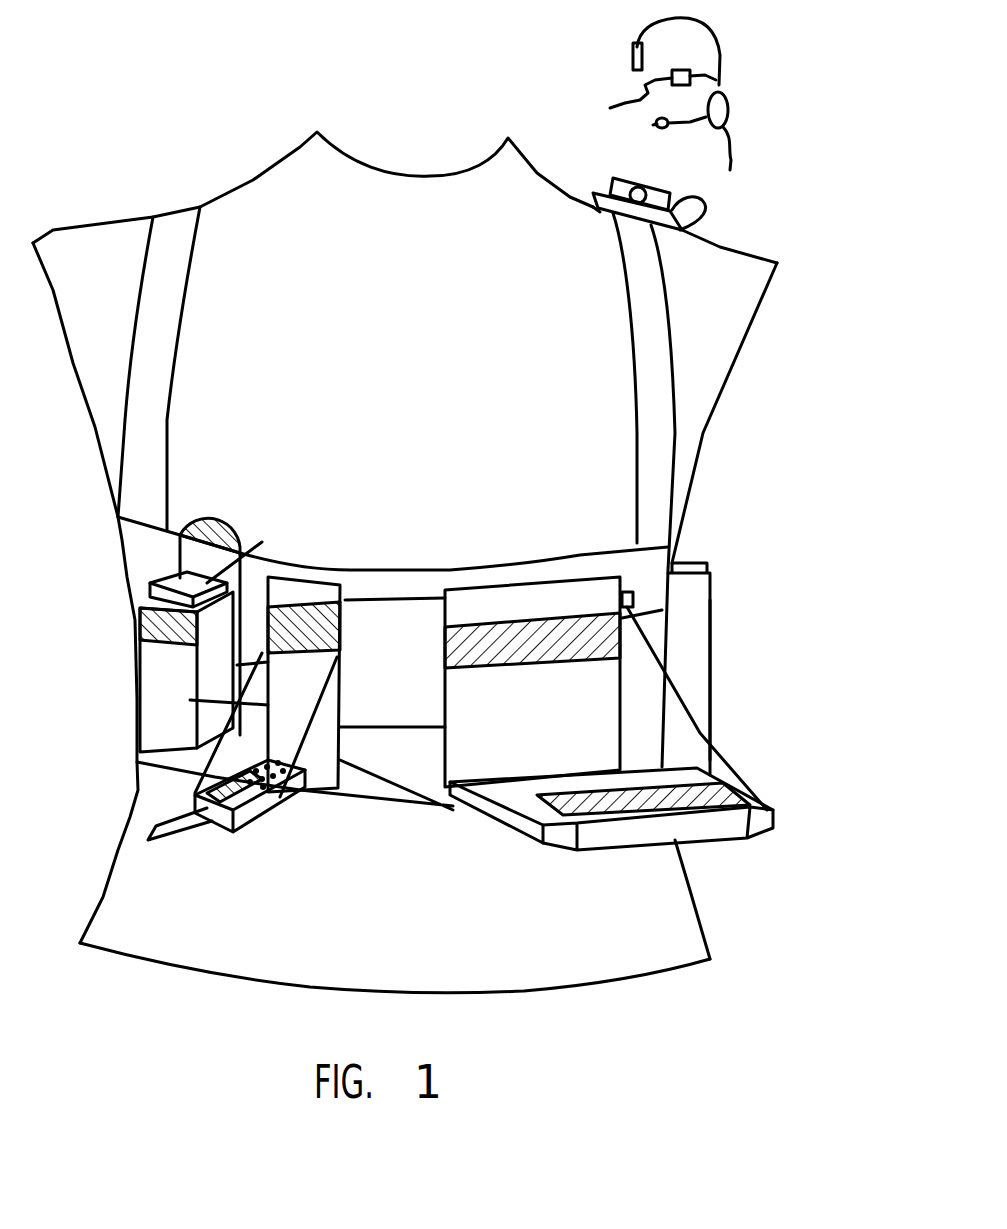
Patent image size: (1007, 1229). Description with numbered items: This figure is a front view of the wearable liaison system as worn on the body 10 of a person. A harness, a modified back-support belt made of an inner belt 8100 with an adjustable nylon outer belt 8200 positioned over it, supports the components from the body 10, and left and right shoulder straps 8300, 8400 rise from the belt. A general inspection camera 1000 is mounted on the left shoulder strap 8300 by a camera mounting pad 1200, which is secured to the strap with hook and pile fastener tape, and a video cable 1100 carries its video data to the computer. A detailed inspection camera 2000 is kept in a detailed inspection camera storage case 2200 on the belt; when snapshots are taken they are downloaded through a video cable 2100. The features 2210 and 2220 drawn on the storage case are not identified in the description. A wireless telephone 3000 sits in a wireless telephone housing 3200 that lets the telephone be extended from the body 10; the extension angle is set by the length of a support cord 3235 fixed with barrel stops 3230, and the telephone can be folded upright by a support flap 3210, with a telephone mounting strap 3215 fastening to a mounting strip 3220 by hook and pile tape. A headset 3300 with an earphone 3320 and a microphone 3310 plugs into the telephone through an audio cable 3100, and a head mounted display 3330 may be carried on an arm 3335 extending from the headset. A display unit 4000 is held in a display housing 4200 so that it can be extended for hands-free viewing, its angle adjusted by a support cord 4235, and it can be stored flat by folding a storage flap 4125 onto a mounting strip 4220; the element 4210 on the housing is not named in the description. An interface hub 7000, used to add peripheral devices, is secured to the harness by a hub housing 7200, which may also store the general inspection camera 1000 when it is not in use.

The body 10 is at (713, 360).
The general inspection camera 1000 is at (630, 177).
The video cable 1100 is at (703, 203).
The camera mounting pad 1200 is at (608, 207).
The detailed inspection camera 2000 is at (250, 552).
The video cable 2100 is at (170, 578).
The detailed inspection camera storage case 2200 is at (133, 672).
The antenna dome 2210 is at (212, 527).
The fastener strip 2220 is at (168, 645).
The wireless telephone 3000 is at (226, 835).
The audio cable 3100 is at (740, 145).
The wireless telephone housing 3200 is at (327, 703).
The support flap 3210 is at (237, 850).
The telephone mounting strap 3215 is at (287, 802).
The mounting strip 3220 is at (340, 618).
The barrel stop 3230 is at (268, 662).
The support cord 3235 is at (268, 697).
The headset 3300 is at (709, 97).
The microphone 3310 is at (657, 127).
The earphone 3320 is at (727, 107).
The head mounted display 3330 is at (621, 106).
The arm 3335 is at (720, 82).
The display unit 4000 is at (607, 830).
The storage flap 4125 is at (643, 828).
The display housing 4200 is at (539, 632).
The tray end block 4210 is at (563, 847).
The mounting strip 4220 is at (550, 655).
The support cord 4235 is at (620, 707).
The interface hub 7000 is at (718, 530).
The hub housing 7200 is at (693, 620).
The inner belt 8100 is at (607, 563).
The outer belt 8200 is at (415, 725).
The left shoulder strap 8300 is at (653, 370).
The right shoulder strap 8400 is at (163, 280).